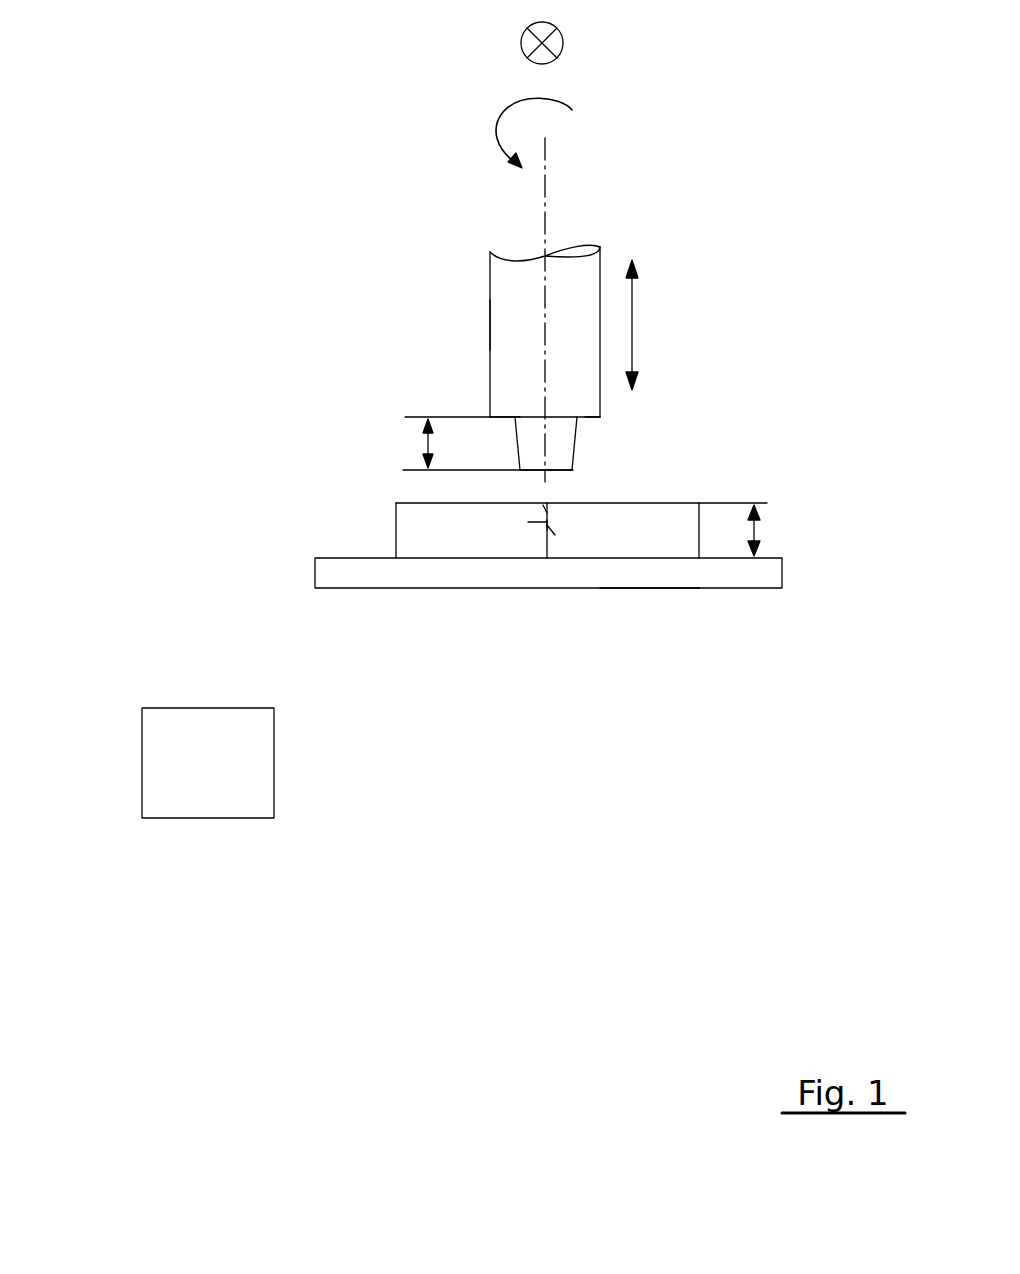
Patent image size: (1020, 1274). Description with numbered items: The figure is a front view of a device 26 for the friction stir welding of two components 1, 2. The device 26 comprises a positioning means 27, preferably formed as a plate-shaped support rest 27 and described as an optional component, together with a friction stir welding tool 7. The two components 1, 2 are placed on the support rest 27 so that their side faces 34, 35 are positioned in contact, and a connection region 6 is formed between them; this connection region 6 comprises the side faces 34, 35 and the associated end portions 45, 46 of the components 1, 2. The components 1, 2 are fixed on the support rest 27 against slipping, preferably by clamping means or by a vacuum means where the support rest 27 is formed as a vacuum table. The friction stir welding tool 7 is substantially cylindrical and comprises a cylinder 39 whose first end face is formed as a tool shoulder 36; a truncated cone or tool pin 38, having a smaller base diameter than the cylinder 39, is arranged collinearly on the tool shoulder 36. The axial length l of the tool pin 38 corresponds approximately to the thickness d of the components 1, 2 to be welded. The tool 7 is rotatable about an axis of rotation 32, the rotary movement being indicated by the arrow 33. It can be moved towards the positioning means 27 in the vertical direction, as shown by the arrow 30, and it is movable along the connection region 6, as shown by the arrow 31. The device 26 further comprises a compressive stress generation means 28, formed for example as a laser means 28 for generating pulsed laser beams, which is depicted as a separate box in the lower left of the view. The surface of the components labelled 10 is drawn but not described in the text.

The device 26 is at (203, 81).
The arrow 31 is at (522, 40).
The arrow 33 is at (498, 128).
The axis of rotation 32 is at (540, 188).
The cylinder 39 is at (511, 290).
The friction stir welding tool 7 is at (478, 325).
The tool shoulder 36 is at (587, 415).
The arrow 30 is at (632, 323).
The tool pin 38 is at (573, 453).
The axial length l is at (428, 442).
The surface of workpiece 10 is at (423, 503).
The component 1 is at (408, 535).
The thickness d is at (754, 530).
The component 2 is at (673, 522).
The positioning means 27 is at (657, 573).
The end portion 46 is at (567, 530).
The end portion 45 is at (528, 522).
The side face 34 is at (543, 513).
The connection region 6 is at (547, 528).
The side face 35 is at (547, 525).
The compressive stress generation means 28 is at (260, 818).